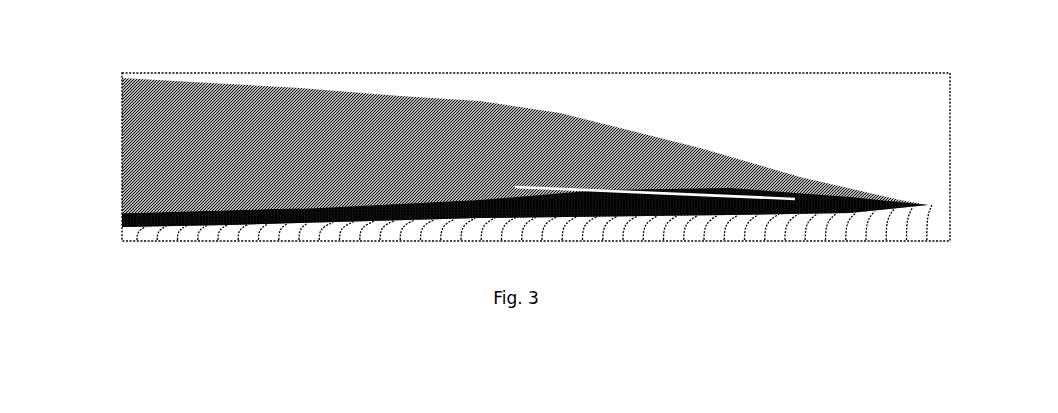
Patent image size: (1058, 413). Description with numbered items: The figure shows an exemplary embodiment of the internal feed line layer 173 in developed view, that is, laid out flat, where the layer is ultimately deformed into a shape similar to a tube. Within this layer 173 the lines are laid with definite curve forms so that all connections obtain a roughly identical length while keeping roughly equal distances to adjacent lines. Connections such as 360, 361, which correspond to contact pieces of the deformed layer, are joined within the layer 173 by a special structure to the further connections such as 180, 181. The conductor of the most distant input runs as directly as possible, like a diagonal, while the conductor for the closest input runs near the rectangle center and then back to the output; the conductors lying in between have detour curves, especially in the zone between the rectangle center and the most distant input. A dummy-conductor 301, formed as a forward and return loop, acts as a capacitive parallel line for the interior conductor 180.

The internal feed line layer 173 is at (467, 72).
The further connection 181 is at (122, 215).
The further connection (interior conductor) 180 is at (122, 221).
The dummy-conductor 301 is at (122, 228).
The connection 360 is at (137, 243).
The connection 361 is at (157, 243).